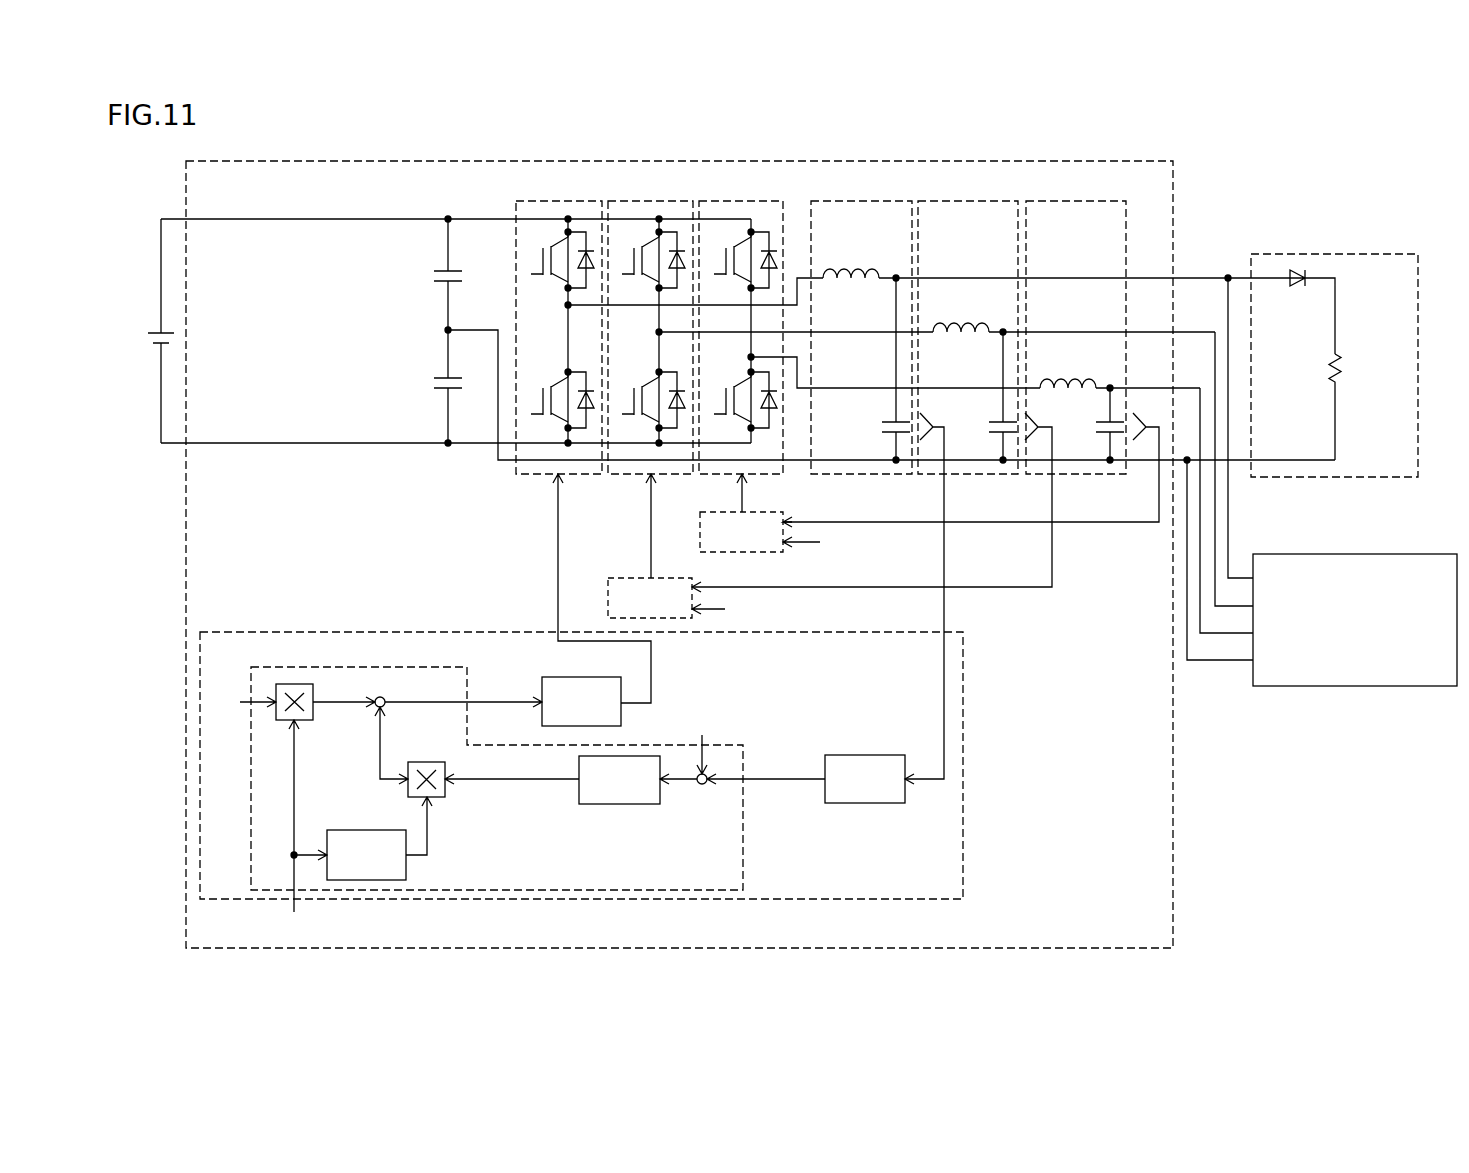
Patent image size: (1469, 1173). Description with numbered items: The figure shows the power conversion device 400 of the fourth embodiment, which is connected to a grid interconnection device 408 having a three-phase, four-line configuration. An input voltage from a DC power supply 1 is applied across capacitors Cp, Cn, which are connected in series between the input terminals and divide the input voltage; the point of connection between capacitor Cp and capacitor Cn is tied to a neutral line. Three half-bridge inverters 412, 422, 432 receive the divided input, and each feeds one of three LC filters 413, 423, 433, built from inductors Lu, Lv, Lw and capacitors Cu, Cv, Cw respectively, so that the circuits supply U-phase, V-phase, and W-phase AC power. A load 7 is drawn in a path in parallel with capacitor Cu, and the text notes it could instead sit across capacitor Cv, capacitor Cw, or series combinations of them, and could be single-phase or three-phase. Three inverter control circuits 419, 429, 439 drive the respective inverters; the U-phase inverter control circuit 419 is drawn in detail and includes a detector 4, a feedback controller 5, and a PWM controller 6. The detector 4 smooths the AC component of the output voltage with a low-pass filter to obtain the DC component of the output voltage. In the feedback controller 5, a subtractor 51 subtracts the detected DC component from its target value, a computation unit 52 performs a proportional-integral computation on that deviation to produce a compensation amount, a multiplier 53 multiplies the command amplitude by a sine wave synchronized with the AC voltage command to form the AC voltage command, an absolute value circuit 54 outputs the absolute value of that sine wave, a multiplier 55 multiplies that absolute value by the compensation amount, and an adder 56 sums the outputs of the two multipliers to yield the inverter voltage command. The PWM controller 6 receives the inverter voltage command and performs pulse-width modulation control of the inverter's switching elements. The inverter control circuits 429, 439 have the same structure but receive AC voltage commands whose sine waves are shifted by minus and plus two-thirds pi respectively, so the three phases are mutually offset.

The power conversion device 400 is at (241, 160).
The DC power supply 1 is at (154, 332).
The inverter 412 is at (548, 200).
The inverter 422 is at (639, 200).
The inverter 432 is at (725, 200).
The filter 413 is at (1019, 476).
The filter 423 is at (953, 380).
The filter 433 is at (991, 348).
The load 7 is at (1323, 352).
The grid interconnection device 408 is at (1292, 554).
The inverter control circuit 439 is at (720, 511).
The inverter control circuit 429 is at (628, 578).
The inverter control circuit 419 is at (446, 631).
The feedback controller 5 is at (366, 667).
The multiplier 53 is at (294, 683).
The adder 56 is at (387, 698).
The PWM controller 6 is at (585, 677).
The multiplier 55 is at (427, 761).
The computation unit 52 is at (620, 804).
The subtractor 51 is at (702, 785).
The detector 4 is at (873, 755).
The absolute value circuit 54 is at (369, 830).
The capacitor Cp is at (438, 270).
The capacitor Cn is at (438, 377).
The inductor Lu is at (845, 273).
The inductor Lv is at (953, 327).
The inductor Lw is at (1061, 383).
The capacitor Cu is at (890, 421).
The capacitor Cv is at (997, 421).
The capacitor Cw is at (1104, 421).
The resistor R is at (1343, 407).